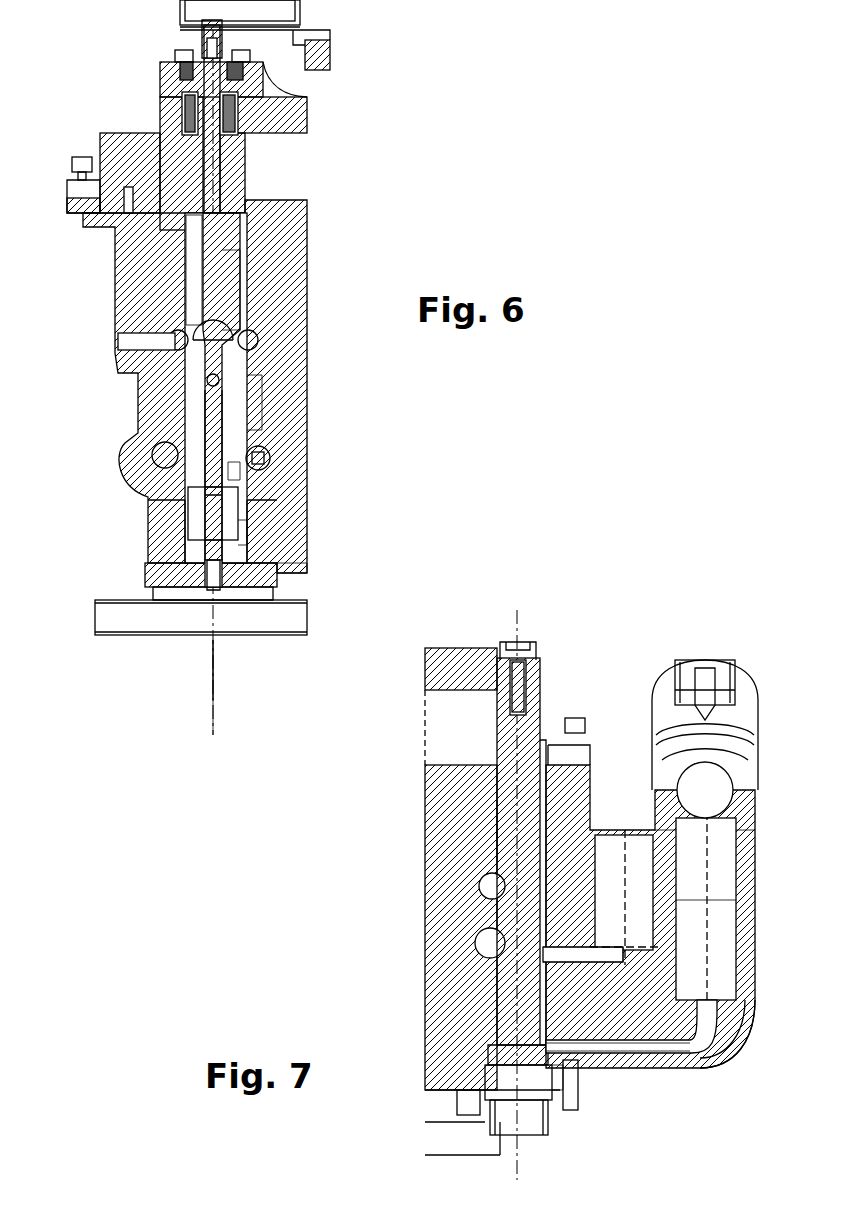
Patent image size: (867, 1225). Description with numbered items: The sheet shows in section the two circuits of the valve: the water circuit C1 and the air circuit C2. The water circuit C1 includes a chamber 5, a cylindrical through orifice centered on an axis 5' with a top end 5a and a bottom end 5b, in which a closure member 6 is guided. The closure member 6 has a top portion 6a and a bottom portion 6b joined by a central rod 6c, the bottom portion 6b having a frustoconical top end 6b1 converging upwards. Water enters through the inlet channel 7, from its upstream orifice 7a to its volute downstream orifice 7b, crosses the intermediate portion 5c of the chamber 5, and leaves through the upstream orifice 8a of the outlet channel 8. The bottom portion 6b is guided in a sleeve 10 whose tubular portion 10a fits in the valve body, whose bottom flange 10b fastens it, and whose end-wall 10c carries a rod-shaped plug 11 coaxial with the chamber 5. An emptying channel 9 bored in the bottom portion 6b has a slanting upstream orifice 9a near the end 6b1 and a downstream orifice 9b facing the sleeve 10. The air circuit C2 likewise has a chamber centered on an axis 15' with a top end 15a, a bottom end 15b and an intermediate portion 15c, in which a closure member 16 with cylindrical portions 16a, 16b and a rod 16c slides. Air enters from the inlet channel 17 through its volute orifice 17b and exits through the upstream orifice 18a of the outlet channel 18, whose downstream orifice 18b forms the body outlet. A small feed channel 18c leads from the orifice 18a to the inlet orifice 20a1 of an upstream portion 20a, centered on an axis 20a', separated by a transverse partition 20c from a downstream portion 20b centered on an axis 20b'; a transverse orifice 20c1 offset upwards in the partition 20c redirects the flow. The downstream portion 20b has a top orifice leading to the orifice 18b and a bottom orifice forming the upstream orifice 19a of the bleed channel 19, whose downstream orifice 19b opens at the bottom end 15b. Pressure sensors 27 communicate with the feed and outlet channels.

In FIG. 6, the chamber 5 is at (212, 386).
In FIG. 6, the top axial end 5a is at (248, 204).
In FIG. 6, the bottom axial end 5b is at (302, 584).
In FIG. 6, the intermediate portion 5c is at (248, 397).
In FIG. 6, the axis 5' is at (148, 687).
In FIG. 6, the closure member 6 is at (150, 388).
In FIG. 6, the top portion 6a is at (200, 168).
In FIG. 6, the bottom portion 6b is at (243, 470).
In FIG. 6, the frustoconical top end 6b1 is at (247, 333).
In FIG. 6, the central rod 6c is at (217, 310).
In FIG. 6, the water inlet channel 7 is at (113, 447).
In FIG. 6, the downstream orifice 7b is at (258, 458).
In FIG. 6, the upstream orifice 7a is at (257, 650).
In FIG. 6, the water outlet channel 8 is at (174, 351).
In FIG. 6, the upstream orifice 8a is at (248, 340).
In FIG. 6, the emptying channel 9 is at (228, 435).
In FIG. 6, the upstream orifice 9a is at (205, 380).
In FIG. 6, the downstream orifice 9b is at (232, 496).
In FIG. 6, the sleeve 10 is at (165, 535).
In FIG. 6, the cylindrical tubular portion 10a is at (250, 530).
In FIG. 6, the bottom flange 10b is at (150, 570).
In FIG. 6, the end-wall 10c is at (185, 575).
In FIG. 6, the plug 11 is at (247, 537).
In FIG. 6, the pressure sensors 27 is at (165, 80).
In FIG. 6, the water circuit C1 is at (186, 289).
In FIG. 7, the top axial end 15a is at (488, 760).
In FIG. 7, the bottom axial end 15b is at (556, 1140).
In FIG. 7, the intermediate portion 15c is at (492, 847).
In FIG. 7, the axis 15' is at (463, 1165).
In FIG. 7, the closure member 16 is at (493, 727).
In FIG. 7, the cylindrical portion 16a is at (520, 727).
In FIG. 7, the cylindrical portion 16b is at (510, 1013).
In FIG. 7, the rod 16c is at (482, 853).
In FIG. 7, the air inlet channel 17 is at (482, 888).
In FIG. 7, the downstream orifice 17b is at (490, 943).
In FIG. 7, the air outlet channel 18 is at (713, 814).
In FIG. 7, the upstream orifice 18a is at (604, 962).
In FIG. 7, the downstream orifice 18b is at (750, 658).
In FIG. 7, the feed channel 18c is at (567, 945).
In FIG. 7, the bleed/emptying channel 19 is at (720, 1037).
In FIG. 7, the upstream orifice 19a is at (713, 987).
In FIG. 7, the downstream orifice 19b is at (540, 1066).
In FIG. 7, the upstream portion 20a is at (624, 858).
In FIG. 7, the axis 20a' is at (707, 889).
In FIG. 7, the inlet orifice 20a1 is at (620, 955).
In FIG. 7, the downstream portion 20b is at (753, 900).
In FIG. 7, the axis 20b' is at (745, 898).
In FIG. 7, the transverse partition 20c is at (675, 938).
In FIG. 7, the transverse orifice 20c1 is at (670, 852).
In FIG. 7, the air circuit C2 is at (495, 823).